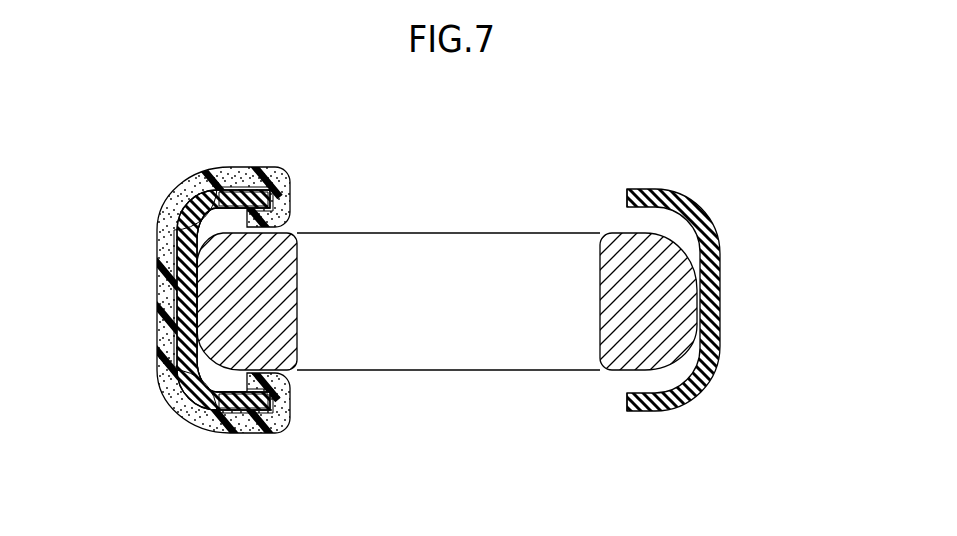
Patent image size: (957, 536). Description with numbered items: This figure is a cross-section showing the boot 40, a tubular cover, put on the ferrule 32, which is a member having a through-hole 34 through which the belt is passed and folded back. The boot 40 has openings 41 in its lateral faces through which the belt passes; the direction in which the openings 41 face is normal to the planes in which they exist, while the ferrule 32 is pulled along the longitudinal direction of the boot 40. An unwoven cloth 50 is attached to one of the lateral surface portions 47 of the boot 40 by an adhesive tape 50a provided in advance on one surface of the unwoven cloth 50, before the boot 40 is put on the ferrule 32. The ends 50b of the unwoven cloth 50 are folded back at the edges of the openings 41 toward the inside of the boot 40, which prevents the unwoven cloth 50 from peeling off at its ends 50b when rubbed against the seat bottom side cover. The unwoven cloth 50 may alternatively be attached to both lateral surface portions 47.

The ferrule 32 is at (451, 233).
The through-hole 34 is at (297, 307).
The boot 40 is at (453, 300).
The lateral surface portion 47 is at (673, 300).
The opening 41 is at (289, 194).
The unwoven cloth 50 is at (186, 304).
The adhesive tape 50a is at (178, 243).
The end of unwoven cloth 50b is at (226, 210).